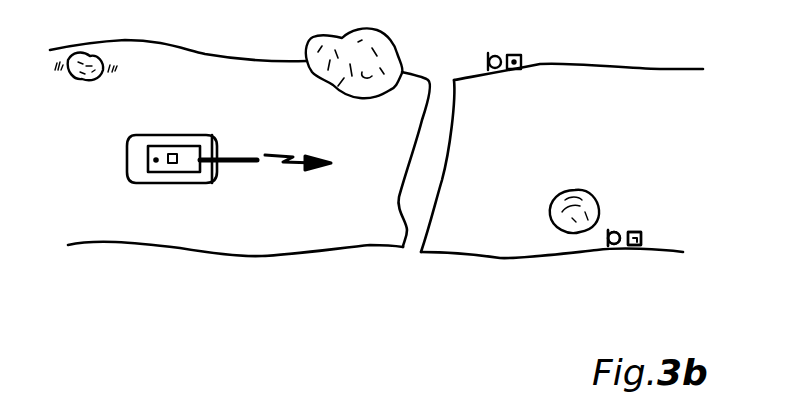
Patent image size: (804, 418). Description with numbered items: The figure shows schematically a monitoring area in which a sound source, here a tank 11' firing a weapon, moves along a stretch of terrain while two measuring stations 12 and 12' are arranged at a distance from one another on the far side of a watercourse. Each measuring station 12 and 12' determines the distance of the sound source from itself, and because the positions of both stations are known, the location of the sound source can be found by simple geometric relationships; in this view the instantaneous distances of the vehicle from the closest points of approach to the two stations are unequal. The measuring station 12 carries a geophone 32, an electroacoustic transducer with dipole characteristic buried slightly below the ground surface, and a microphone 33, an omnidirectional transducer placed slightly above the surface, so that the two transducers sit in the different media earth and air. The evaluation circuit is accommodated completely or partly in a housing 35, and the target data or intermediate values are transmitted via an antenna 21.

The tank 11' is at (148, 178).
The measuring station 12' is at (564, 43).
The measuring station 12 is at (648, 183).
The geophone 32 is at (569, 7).
The microphone 33 is at (611, 229).
The antenna 21 is at (642, 235).
The housing 35 is at (642, 238).